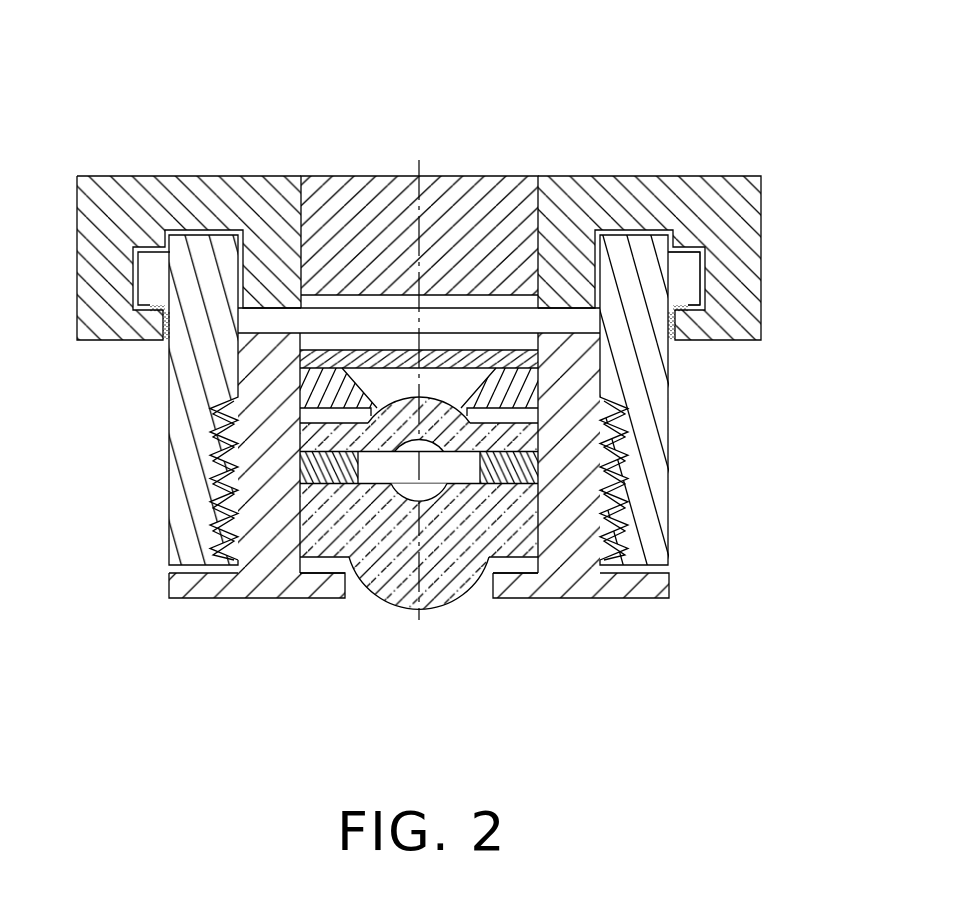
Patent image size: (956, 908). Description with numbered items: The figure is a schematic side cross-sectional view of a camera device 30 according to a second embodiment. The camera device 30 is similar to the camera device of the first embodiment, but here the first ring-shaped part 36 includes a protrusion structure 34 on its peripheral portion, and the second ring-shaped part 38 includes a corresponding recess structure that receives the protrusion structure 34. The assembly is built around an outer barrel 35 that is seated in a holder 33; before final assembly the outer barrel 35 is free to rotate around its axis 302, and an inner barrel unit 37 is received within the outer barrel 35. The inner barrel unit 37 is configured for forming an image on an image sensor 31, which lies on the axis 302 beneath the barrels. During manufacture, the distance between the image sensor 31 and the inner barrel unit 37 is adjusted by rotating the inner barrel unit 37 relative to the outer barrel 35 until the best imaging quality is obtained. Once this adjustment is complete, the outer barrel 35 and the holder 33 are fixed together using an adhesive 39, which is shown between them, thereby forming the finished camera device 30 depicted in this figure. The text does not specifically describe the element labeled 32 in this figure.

The camera device 30 is at (396, 26).
The axis 302 is at (418, 176).
The image sensor 31 is at (452, 200).
The lens barrel 32 is at (567, 390).
The holder 33 is at (682, 193).
The protrusion structure 34 is at (677, 288).
The outer barrel 35 is at (653, 476).
The first ring-shaped part 36 is at (618, 253).
The inner barrel unit 37 is at (588, 598).
The second ring-shaped part 38 is at (735, 314).
The adhesive 39 is at (167, 337).